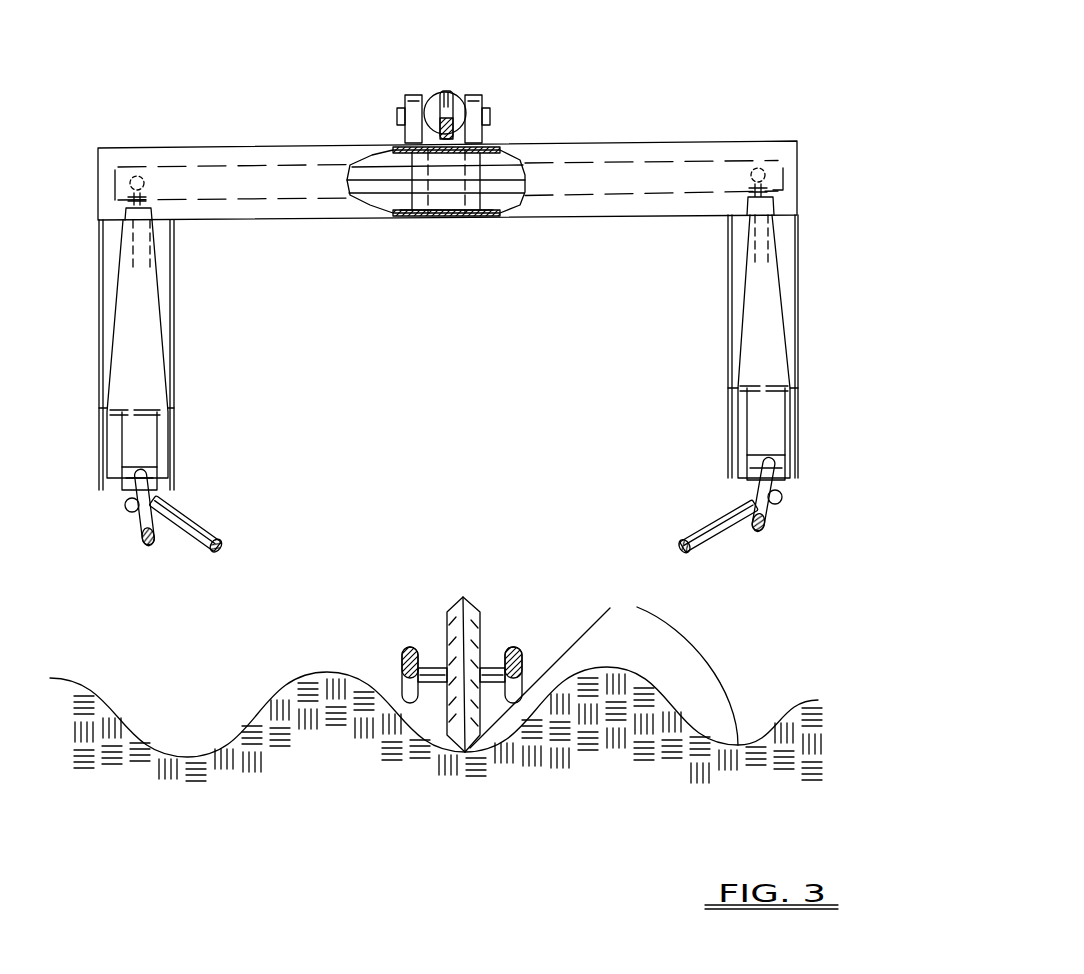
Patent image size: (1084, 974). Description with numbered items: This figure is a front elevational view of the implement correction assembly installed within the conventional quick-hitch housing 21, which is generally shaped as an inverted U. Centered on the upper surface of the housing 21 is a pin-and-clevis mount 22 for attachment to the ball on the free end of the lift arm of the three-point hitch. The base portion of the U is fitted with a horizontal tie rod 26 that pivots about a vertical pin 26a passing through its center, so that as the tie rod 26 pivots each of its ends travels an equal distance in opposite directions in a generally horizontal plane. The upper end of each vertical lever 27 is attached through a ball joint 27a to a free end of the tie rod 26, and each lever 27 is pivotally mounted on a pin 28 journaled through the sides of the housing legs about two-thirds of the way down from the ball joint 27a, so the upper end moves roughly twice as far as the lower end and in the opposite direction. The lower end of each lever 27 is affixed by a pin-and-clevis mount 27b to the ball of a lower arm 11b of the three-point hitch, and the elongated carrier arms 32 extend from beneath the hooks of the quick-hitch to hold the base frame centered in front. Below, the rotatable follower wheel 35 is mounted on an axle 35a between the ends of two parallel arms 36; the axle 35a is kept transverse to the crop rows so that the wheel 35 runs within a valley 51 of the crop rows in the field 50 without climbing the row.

The quick-hitch housing 21 is at (243, 153).
The pin-and-clevis mount 22 is at (472, 97).
The horizontal tie rod 26 is at (497, 156).
The vertical pin 26a is at (461, 203).
The ball joint 27a is at (139, 177).
The vertical lever 27 is at (150, 330).
The pin 28 is at (177, 397).
The pin-and-clevis mount 27b is at (162, 478).
The lower arm 11b is at (147, 522).
The carrier arm 32 is at (205, 522).
The rotatable wheel 35 is at (475, 614).
The axle 35a is at (493, 672).
The parallel arm 36 is at (402, 670).
The valley 51 is at (195, 755).
The field 50 is at (360, 752).